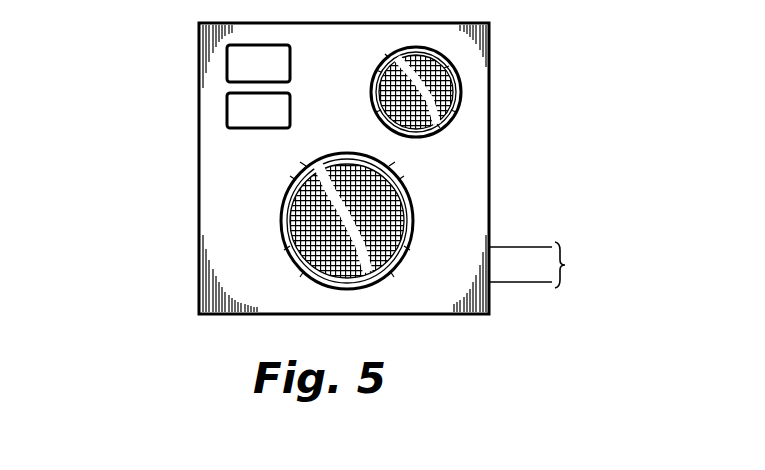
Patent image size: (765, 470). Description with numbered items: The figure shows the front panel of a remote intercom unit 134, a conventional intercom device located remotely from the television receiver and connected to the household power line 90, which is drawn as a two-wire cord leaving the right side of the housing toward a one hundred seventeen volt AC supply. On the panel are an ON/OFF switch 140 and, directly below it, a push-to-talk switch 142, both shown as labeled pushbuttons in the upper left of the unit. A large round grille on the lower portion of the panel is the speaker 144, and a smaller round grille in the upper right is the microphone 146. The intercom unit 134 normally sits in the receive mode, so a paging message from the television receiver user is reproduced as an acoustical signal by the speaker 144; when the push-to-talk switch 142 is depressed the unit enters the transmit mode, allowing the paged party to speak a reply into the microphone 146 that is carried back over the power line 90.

The household power line 90 is at (527, 282).
The remote intercom unit 134 is at (199, 167).
The ON/OFF switch 140 is at (227, 61).
The push-to-talk switch 142 is at (227, 104).
The speaker 144 is at (281, 222).
The microphone 146 is at (461, 85).